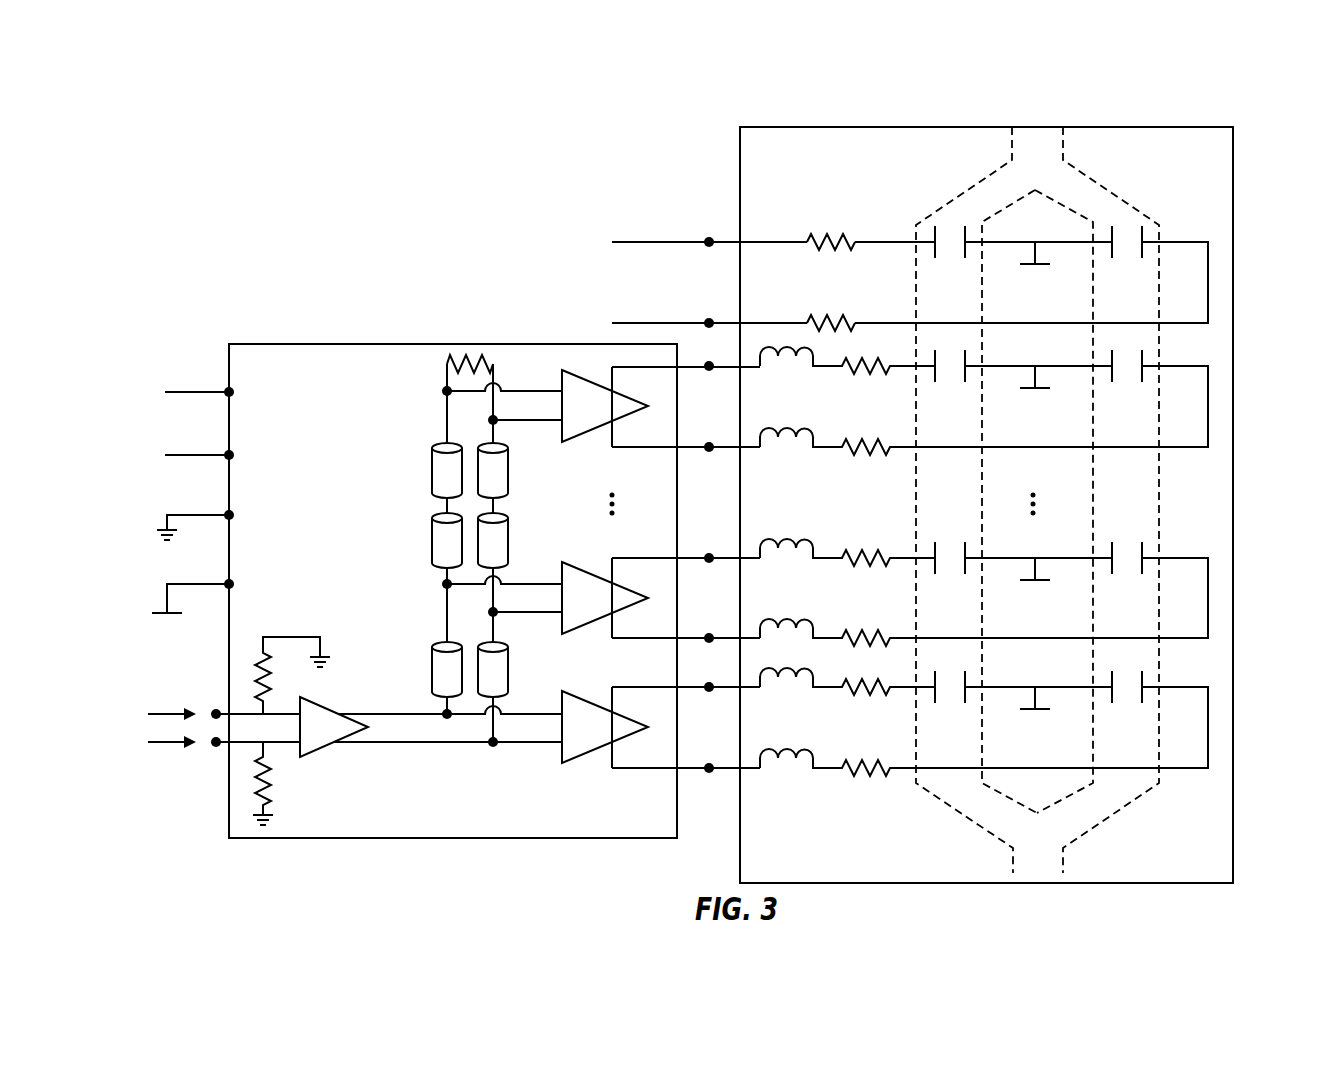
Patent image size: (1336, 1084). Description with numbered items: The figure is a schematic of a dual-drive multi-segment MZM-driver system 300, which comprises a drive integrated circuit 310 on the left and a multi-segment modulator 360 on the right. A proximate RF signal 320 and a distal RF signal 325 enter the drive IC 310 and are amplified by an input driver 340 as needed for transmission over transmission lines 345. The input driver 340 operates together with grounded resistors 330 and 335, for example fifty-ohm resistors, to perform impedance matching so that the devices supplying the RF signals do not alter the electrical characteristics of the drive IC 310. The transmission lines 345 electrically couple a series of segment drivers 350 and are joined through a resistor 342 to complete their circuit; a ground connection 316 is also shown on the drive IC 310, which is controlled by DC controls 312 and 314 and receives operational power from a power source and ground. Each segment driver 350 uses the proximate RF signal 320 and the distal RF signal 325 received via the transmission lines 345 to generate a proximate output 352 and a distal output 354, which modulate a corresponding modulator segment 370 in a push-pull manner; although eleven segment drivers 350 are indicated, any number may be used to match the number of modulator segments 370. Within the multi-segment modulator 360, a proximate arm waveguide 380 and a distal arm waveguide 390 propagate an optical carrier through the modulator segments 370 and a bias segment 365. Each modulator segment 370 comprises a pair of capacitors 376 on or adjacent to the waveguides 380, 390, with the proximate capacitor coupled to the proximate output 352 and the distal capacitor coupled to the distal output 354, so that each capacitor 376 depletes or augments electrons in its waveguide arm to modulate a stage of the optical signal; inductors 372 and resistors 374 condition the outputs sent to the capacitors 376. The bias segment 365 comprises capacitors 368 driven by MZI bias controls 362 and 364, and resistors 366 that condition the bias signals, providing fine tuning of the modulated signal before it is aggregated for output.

The dual-drive multi-segment MZM-driver system 300 is at (180, 256).
The drive integrated circuit 310 is at (343, 344).
The direct current control 312 is at (193, 388).
The direct current control 314 is at (195, 460).
The ground connection 316 is at (162, 528).
The proximate RF signal 320 is at (167, 712).
The distal RF signal 325 is at (167, 748).
The grounded resistor 330 is at (272, 672).
The grounded resistor 335 is at (272, 778).
The input driver 340 is at (325, 752).
The resistor 342 is at (467, 348).
The transmission lines 345 is at (432, 470).
The segment driver 350 is at (600, 436).
The proximate output 352 is at (648, 369).
The distal output 354 is at (650, 449).
The multi-segment modulator 360 is at (740, 143).
The MZI bias control 362 is at (708, 238).
The MZI bias control 364 is at (708, 319).
The bias segment 365 is at (1061, 275).
The resistor 366 is at (826, 320).
The capacitor 368 is at (1097, 233).
The modulator segment 370 is at (1037, 559).
The inductor 372 is at (787, 349).
The resistor 374 is at (860, 368).
The capacitor 376 is at (1097, 357).
The proximate arm waveguide 380 is at (961, 196).
The distal arm waveguide 390 is at (1118, 196).